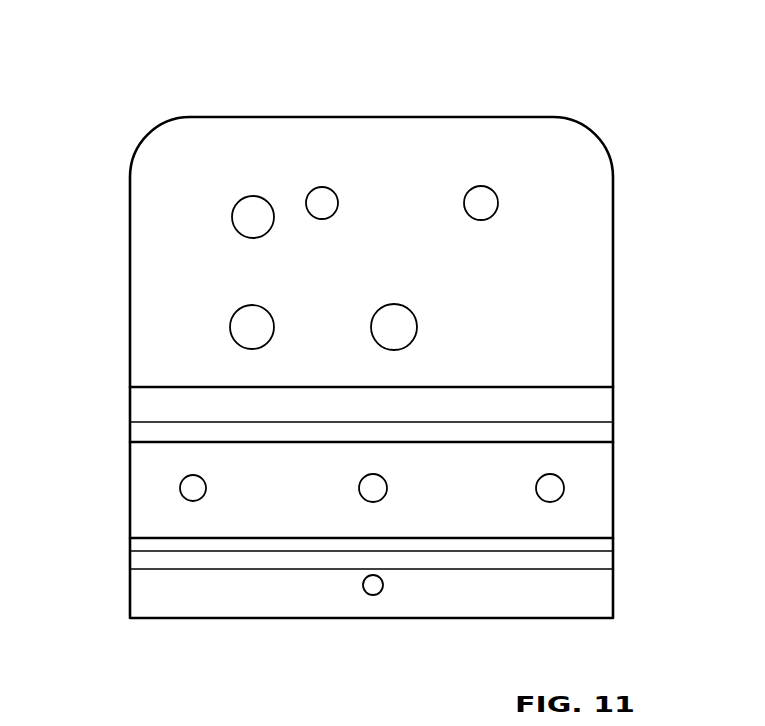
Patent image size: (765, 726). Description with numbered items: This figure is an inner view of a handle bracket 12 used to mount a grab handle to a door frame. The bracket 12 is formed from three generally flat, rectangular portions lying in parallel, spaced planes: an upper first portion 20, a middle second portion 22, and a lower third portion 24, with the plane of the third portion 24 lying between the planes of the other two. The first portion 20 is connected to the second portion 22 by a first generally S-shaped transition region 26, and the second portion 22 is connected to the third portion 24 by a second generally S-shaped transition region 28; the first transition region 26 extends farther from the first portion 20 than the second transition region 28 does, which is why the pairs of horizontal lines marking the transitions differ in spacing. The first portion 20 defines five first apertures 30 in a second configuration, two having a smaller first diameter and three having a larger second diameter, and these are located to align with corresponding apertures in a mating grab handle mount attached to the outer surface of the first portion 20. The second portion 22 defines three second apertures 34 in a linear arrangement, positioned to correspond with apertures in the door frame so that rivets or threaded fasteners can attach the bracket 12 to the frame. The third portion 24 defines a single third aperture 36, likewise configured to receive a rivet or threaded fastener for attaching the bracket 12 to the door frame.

The bracket 12 is at (153, 86).
The first portion 20 is at (395, 153).
The second portion 22 is at (150, 454).
The third portion 24 is at (197, 590).
The first transition region 26 is at (592, 402).
The second transition region 28 is at (605, 563).
The first apertures 30 is at (258, 197).
The second apertures 34 is at (564, 490).
The third aperture 36 is at (373, 595).